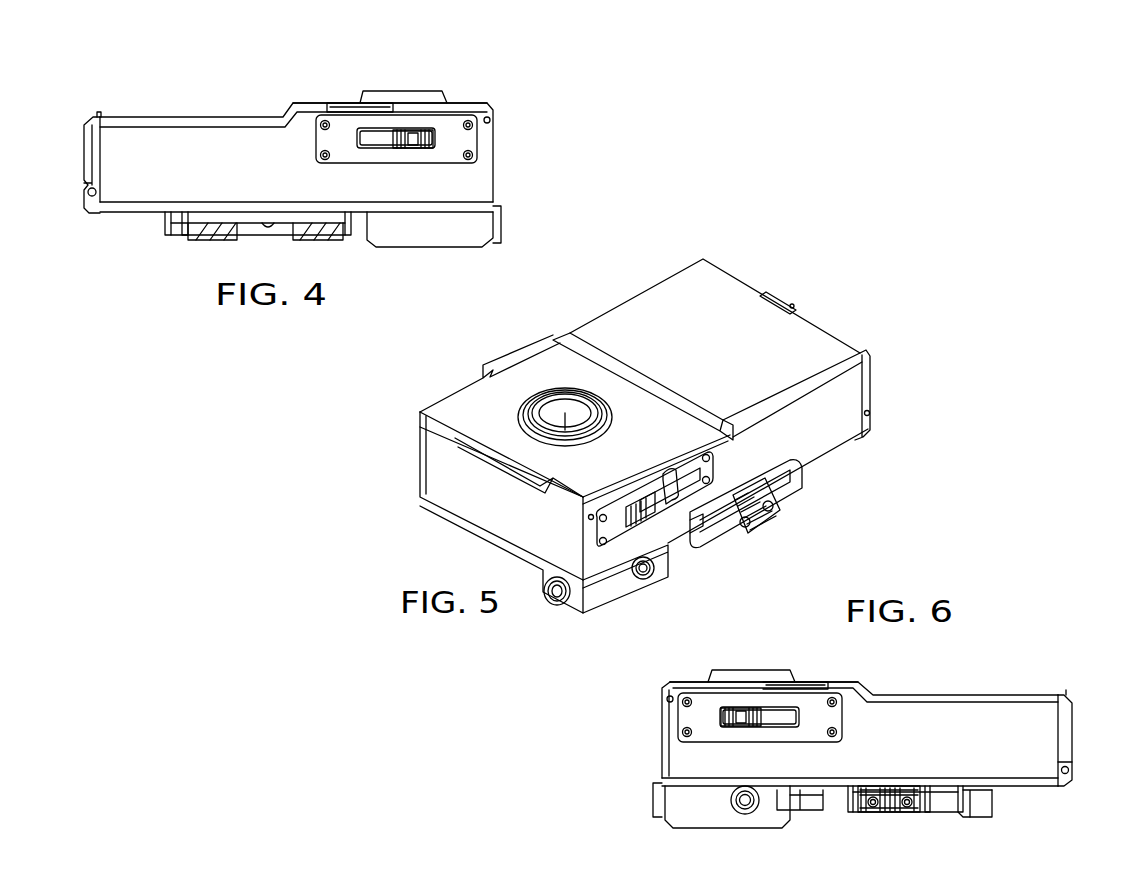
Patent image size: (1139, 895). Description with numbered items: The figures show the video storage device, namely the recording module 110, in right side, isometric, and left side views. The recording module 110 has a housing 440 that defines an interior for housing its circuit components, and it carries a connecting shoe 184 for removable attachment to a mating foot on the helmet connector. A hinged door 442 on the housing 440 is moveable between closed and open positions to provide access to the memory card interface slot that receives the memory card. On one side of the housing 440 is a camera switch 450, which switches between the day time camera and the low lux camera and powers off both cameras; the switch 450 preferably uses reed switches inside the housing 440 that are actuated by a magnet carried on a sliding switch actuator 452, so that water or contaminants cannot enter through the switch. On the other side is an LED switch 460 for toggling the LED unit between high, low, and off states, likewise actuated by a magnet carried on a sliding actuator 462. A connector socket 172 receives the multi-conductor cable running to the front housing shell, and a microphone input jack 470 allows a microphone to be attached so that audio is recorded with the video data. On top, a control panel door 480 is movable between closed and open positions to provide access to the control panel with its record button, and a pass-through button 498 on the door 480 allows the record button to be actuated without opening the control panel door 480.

In FIG. 4, the recording module 110 is at (151, 95).
In FIG. 5, the recording module 110 is at (463, 368).
In FIG. 6, the recording module 110 is at (1025, 678).
In FIG. 4, the housing 440 is at (224, 152).
In FIG. 5, the housing 440 is at (671, 312).
In FIG. 6, the housing 440 is at (937, 730).
In FIG. 4, the hinged door 442 is at (85, 162).
In FIG. 5, the hinged door 442 is at (847, 338).
In FIG. 6, the hinged door 442 is at (1073, 724).
In FIG. 4, the camera switch 450 is at (447, 128).
In FIG. 4, the sliding switch actuator 452 is at (420, 128).
In FIG. 4, the control panel door 480 is at (470, 103).
In FIG. 5, the control panel door 480 is at (523, 377).
In FIG. 6, the control panel door 480 is at (692, 684).
In FIG. 4, the connecting shoe 184 is at (205, 230).
In FIG. 5, the pass-through button 498 is at (563, 412).
In FIG. 5, the LED switch 460 is at (697, 438).
In FIG. 6, the LED switch 460 is at (808, 704).
In FIG. 5, the sliding actuator 462 is at (646, 498).
In FIG. 5, the connector socket 172 is at (554, 604).
In FIG. 5, the microphone input jack 470 is at (652, 586).
In FIG. 6, the microphone input jack 470 is at (746, 816).